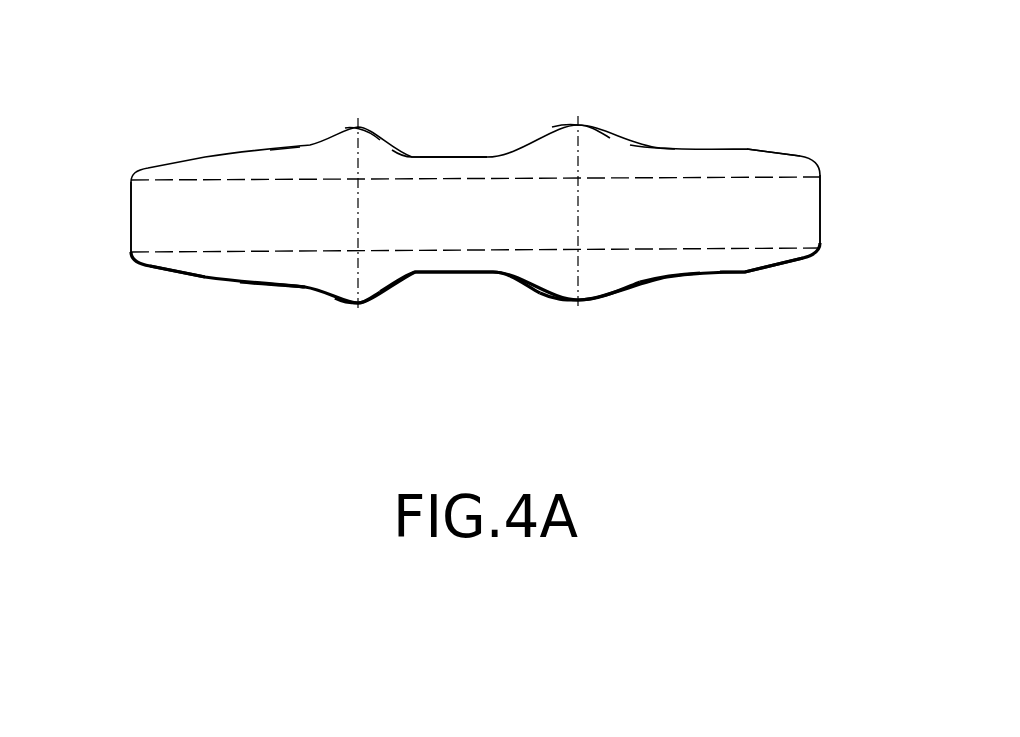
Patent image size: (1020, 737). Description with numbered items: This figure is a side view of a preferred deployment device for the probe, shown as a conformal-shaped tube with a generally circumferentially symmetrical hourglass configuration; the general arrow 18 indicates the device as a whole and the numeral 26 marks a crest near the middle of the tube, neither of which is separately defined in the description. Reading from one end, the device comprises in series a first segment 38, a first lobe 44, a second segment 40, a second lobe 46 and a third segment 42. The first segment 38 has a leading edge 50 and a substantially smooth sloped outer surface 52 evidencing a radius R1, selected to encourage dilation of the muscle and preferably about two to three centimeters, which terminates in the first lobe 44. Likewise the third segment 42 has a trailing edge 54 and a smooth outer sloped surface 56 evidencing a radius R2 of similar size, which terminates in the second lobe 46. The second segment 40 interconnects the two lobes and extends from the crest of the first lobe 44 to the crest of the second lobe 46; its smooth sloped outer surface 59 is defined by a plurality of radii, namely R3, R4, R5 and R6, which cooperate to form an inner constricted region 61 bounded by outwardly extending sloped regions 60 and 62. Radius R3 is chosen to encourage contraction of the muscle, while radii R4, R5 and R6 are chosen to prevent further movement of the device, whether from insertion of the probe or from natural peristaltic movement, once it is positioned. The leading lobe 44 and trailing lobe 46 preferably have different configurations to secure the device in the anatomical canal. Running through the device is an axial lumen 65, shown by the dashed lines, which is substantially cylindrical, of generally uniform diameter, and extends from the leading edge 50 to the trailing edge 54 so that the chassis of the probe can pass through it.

The golf club shaft section / article 18 is at (795, 305).
The second peak (right convex portion) 26 is at (557, 127).
The first segment 38 is at (750, 280).
The second segment 40 is at (457, 273).
The third segment 42 is at (175, 273).
The first lobe 44 is at (593, 302).
The second lobe 46 is at (348, 305).
The leading edge 50 is at (822, 243).
The sloped outer surface 52 is at (663, 278).
The trailing edge 54 is at (128, 241).
The outer sloped surface 56 is at (265, 280).
The sloped outer surface 59 is at (548, 108).
The sloped region 60 is at (533, 290).
The inner constricted region 61 is at (468, 157).
The sloped region 62 is at (392, 290).
The axial lumen 65 is at (777, 187).
The radius R1 is at (655, 148).
The radius R2 is at (285, 148).
The radius R3 is at (500, 275).
The radius R4 is at (438, 156).
The radius R5 is at (400, 150).
The radius R6 is at (378, 137).